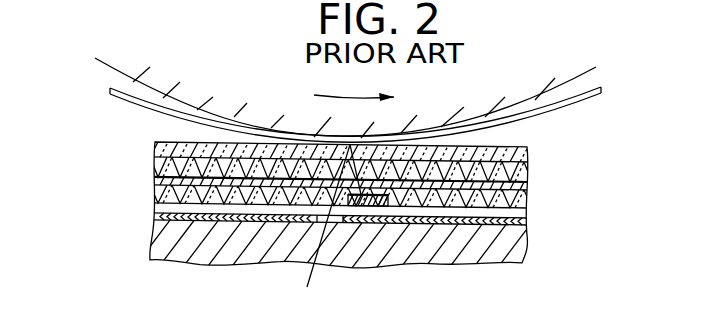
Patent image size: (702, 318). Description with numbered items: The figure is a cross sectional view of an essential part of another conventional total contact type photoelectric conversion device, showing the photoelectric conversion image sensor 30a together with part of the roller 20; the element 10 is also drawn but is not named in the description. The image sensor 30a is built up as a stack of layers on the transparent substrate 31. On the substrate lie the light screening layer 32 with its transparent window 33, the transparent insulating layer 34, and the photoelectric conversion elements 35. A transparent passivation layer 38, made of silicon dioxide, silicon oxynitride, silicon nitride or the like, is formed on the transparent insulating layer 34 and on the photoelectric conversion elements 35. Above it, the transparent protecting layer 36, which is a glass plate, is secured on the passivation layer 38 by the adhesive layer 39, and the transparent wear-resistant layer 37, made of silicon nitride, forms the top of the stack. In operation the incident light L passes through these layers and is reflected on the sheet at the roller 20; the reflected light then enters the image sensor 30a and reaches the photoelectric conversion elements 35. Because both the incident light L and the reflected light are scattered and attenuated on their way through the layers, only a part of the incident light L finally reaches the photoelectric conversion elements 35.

The ink ribbon 10 is at (110, 66).
The roller 20 is at (578, 96).
The photoelectric conversion image sensor 30a is at (573, 140).
The transparent substrate 31 is at (464, 255).
The light screening layer 32 is at (533, 245).
The transparent window 33 is at (342, 206).
The transparent insulating layer 34 is at (530, 226).
The photoelectric conversion elements 35 is at (378, 204).
The transparent protecting layer 36 is at (527, 170).
The transparent wear-resistant layer 37 is at (530, 152).
The transparent passivation layer 38 is at (532, 208).
The adhesive layer 39 is at (528, 188).
The incident light L is at (329, 226).